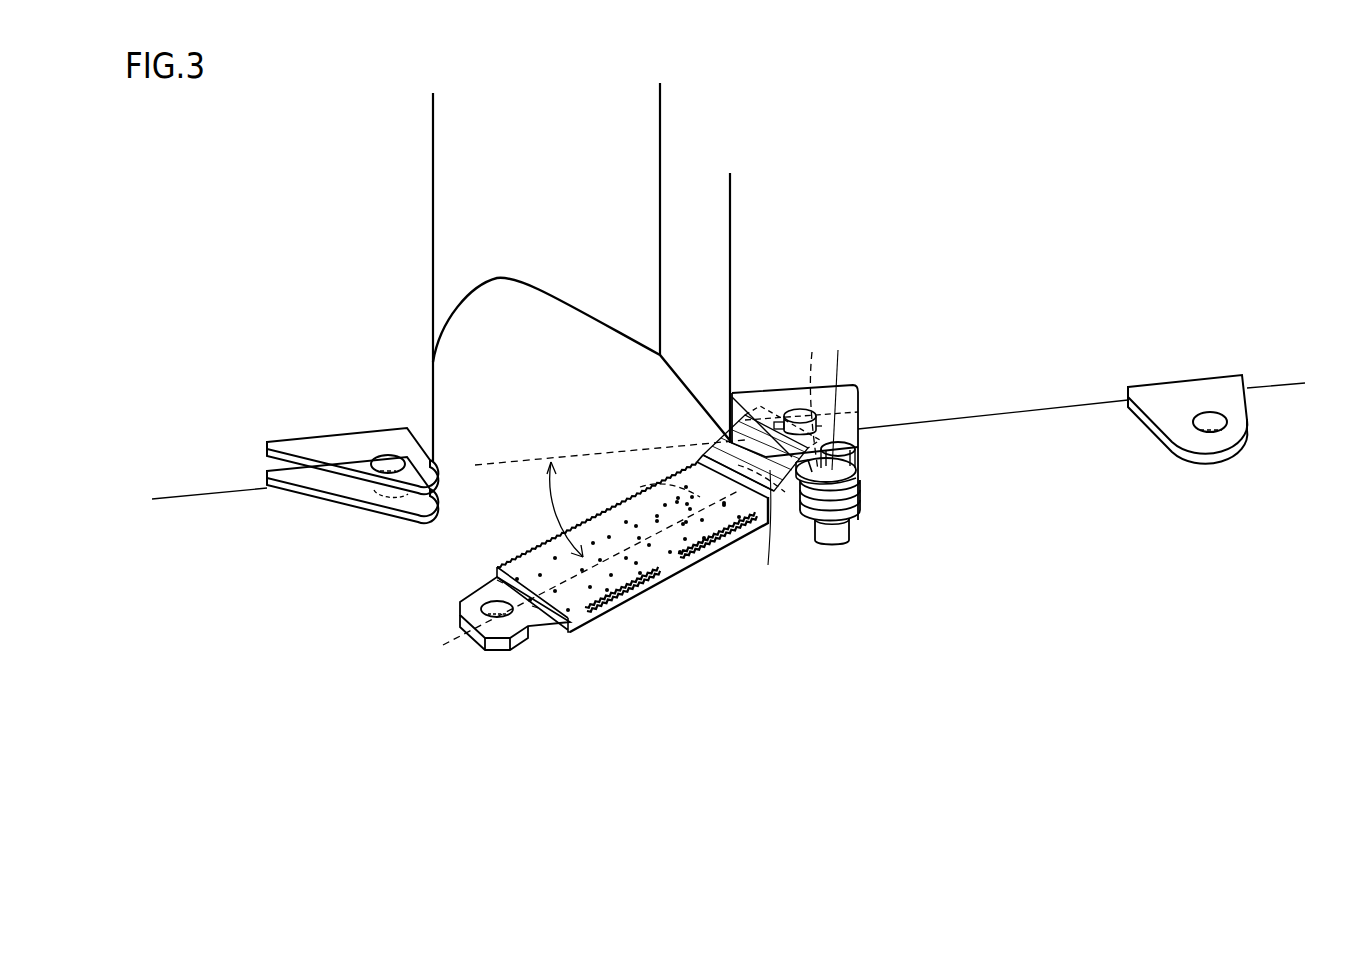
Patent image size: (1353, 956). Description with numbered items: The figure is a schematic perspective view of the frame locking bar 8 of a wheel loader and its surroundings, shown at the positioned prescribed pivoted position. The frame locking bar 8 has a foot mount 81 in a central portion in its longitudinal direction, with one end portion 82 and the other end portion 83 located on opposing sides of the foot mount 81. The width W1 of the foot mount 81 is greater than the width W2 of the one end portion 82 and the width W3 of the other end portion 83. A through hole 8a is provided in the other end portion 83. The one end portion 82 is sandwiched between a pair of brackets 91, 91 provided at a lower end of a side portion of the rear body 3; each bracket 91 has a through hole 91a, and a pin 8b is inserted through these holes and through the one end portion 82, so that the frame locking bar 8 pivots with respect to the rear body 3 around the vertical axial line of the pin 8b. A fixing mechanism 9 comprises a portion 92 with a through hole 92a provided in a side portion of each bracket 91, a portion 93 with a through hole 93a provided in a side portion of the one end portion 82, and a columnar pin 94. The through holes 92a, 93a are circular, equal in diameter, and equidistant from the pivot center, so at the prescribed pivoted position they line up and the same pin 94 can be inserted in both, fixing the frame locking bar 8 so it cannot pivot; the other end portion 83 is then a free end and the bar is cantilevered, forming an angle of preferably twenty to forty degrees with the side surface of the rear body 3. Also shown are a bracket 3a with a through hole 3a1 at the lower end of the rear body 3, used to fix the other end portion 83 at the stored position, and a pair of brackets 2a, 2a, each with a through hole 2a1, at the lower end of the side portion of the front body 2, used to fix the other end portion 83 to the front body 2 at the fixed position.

The front body 2 is at (212, 462).
The bracket 2a is at (312, 470).
The through hole 2a1 is at (363, 467).
The rear body 3 is at (1042, 373).
The bracket 3a is at (1226, 432).
The through hole 3a1 is at (1196, 428).
The frame locking bar 8 is at (645, 545).
The through hole 8a is at (470, 620).
The pin (pivot shaft) 8b is at (800, 408).
The foot mount 81 is at (624, 504).
The one end portion 82 is at (705, 470).
The other end portion 83 is at (480, 596).
The fixing mechanism 9 is at (904, 580).
The bracket 91 is at (858, 445).
The through hole 91a is at (788, 485).
The portion having through hole 92 is at (824, 505).
The through hole 92a is at (822, 460).
The portion having through hole 93 is at (803, 505).
The through hole 93a is at (836, 456).
The columnar pin 94 is at (858, 463).
The width of foot mount W1 is at (678, 484).
The width of one end portion W2 is at (741, 438).
The width of other end portion W3 is at (538, 608).